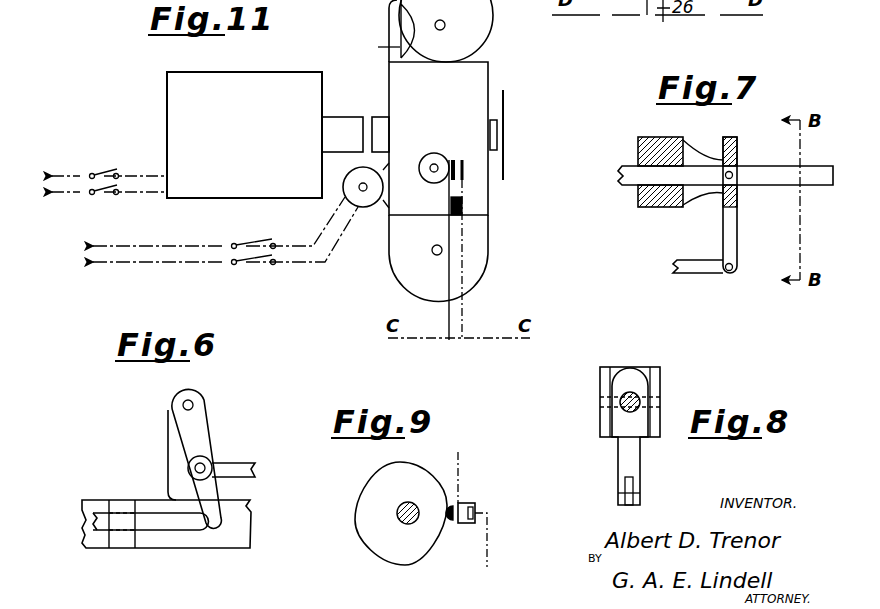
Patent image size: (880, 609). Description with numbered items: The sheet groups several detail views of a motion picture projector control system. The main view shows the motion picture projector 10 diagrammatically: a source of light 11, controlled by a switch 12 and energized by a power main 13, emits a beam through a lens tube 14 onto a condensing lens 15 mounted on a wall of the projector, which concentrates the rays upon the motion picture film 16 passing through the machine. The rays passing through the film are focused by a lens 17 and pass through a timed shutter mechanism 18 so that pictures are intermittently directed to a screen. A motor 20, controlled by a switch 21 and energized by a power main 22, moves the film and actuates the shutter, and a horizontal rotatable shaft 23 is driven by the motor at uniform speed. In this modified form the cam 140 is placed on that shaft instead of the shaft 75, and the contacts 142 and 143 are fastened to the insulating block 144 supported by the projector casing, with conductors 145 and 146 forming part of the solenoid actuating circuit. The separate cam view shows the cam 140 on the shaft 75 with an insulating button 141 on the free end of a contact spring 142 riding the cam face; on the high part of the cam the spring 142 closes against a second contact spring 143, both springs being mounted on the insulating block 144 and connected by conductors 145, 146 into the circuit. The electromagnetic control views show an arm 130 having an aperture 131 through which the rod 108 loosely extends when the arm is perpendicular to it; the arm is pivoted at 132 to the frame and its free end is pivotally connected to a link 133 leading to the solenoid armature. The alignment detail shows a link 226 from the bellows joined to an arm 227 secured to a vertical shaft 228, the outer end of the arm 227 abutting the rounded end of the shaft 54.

In FIG. 11, the motion picture projector 10 is at (454, 151).
In FIG. 11, the source of light 11 is at (244, 135).
In FIG. 11, the switch 12 is at (109, 192).
In FIG. 11, the power main 13 is at (60, 192).
In FIG. 11, the lens tube 14 is at (342, 134).
In FIG. 11, the condensing lens 15 is at (378, 122).
In FIG. 11, the motion picture film 16 is at (377, 46).
In FIG. 11, the lens 17 is at (497, 135).
In FIG. 11, the timed shutter mechanism 18 is at (504, 172).
In FIG. 11, the motor 20 is at (353, 172).
In FIG. 11, the switch 21 is at (225, 239).
In FIG. 11, the power main 22 is at (110, 262).
In FIG. 11, the horizontal rotatable shaft 23 is at (430, 176).
In FIG. 6, the shaft 54 is at (164, 527).
In FIG. 9, the shaft 75 is at (410, 503).
In FIG. 7, the rod 108 is at (628, 178).
In FIG. 8, the rod 108 is at (640, 402).
In FIG. 7, the arm 130 is at (738, 152).
In FIG. 8, the arm 130 is at (626, 376).
In FIG. 7, the aperture 131 is at (737, 191).
In FIG. 7, the pivot 132 is at (726, 178).
In FIG. 8, the pivot 132 is at (600, 401).
In FIG. 7, the link 133 is at (698, 271).
In FIG. 8, the link 133 is at (633, 493).
In FIG. 11, the cam 140 is at (429, 160).
In FIG. 9, the cam 140 is at (371, 542).
In FIG. 9, the insulating button 141 is at (451, 523).
In FIG. 11, the contact spring 142 is at (453, 158).
In FIG. 9, the contact spring 142 is at (460, 503).
In FIG. 11, the second contact spring 143 is at (472, 156).
In FIG. 9, the second contact spring 143 is at (477, 512).
In FIG. 11, the block 144 is at (452, 216).
In FIG. 9, the block 144 is at (470, 521).
In FIG. 11, the conductor 145 is at (449, 310).
In FIG. 9, the conductor 145 is at (462, 460).
In FIG. 11, the conductor 146 is at (463, 328).
In FIG. 9, the conductor 146 is at (490, 563).
In FIG. 6, the link 226 is at (257, 477).
In FIG. 6, the arm 227 is at (198, 434).
In FIG. 6, the vertical shaft 228 is at (192, 402).